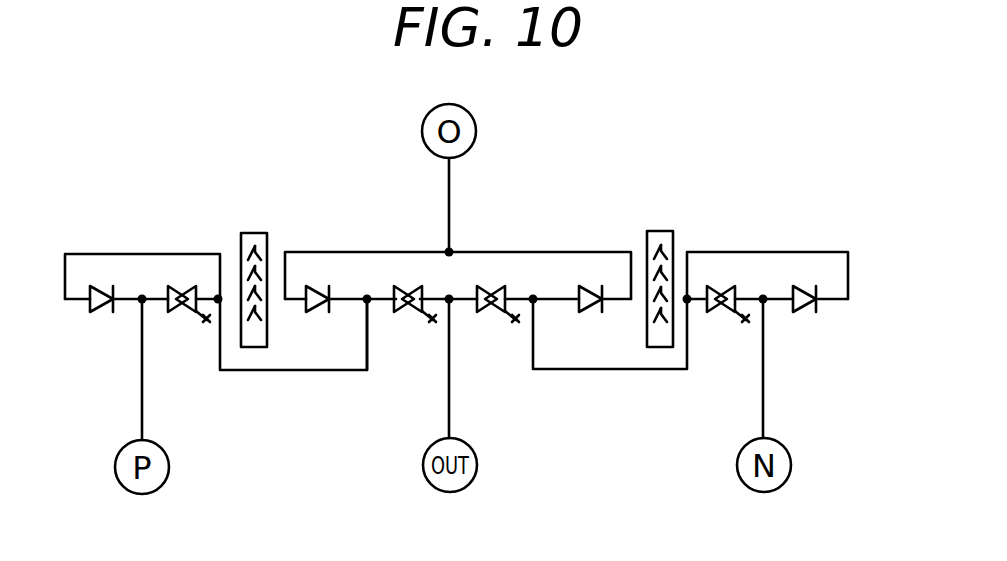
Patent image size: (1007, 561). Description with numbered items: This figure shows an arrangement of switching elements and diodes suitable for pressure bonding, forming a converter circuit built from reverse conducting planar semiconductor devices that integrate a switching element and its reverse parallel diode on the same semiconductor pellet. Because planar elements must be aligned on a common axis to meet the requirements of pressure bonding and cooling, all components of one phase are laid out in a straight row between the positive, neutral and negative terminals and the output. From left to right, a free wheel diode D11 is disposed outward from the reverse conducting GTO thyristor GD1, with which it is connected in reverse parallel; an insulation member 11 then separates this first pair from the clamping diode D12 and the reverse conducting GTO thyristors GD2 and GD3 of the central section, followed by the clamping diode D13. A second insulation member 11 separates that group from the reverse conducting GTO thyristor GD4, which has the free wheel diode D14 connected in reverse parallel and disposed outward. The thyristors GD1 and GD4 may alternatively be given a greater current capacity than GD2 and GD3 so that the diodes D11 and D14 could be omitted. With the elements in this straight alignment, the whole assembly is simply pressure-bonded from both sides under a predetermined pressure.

The insulation member 11 is at (251, 233).
The free wheel diode D11 is at (100, 313).
The clamping diode D12 is at (315, 311).
The clamping diode D13 is at (580, 312).
The free wheel diode D14 is at (798, 311).
The reverse conducting GTO thyristor GD1 is at (184, 287).
The reverse conducting GTO thyristor GD2 is at (405, 286).
The reverse conducting GTO thyristor GD3 is at (483, 287).
The reverse conducting GTO thyristor GD4 is at (713, 287).